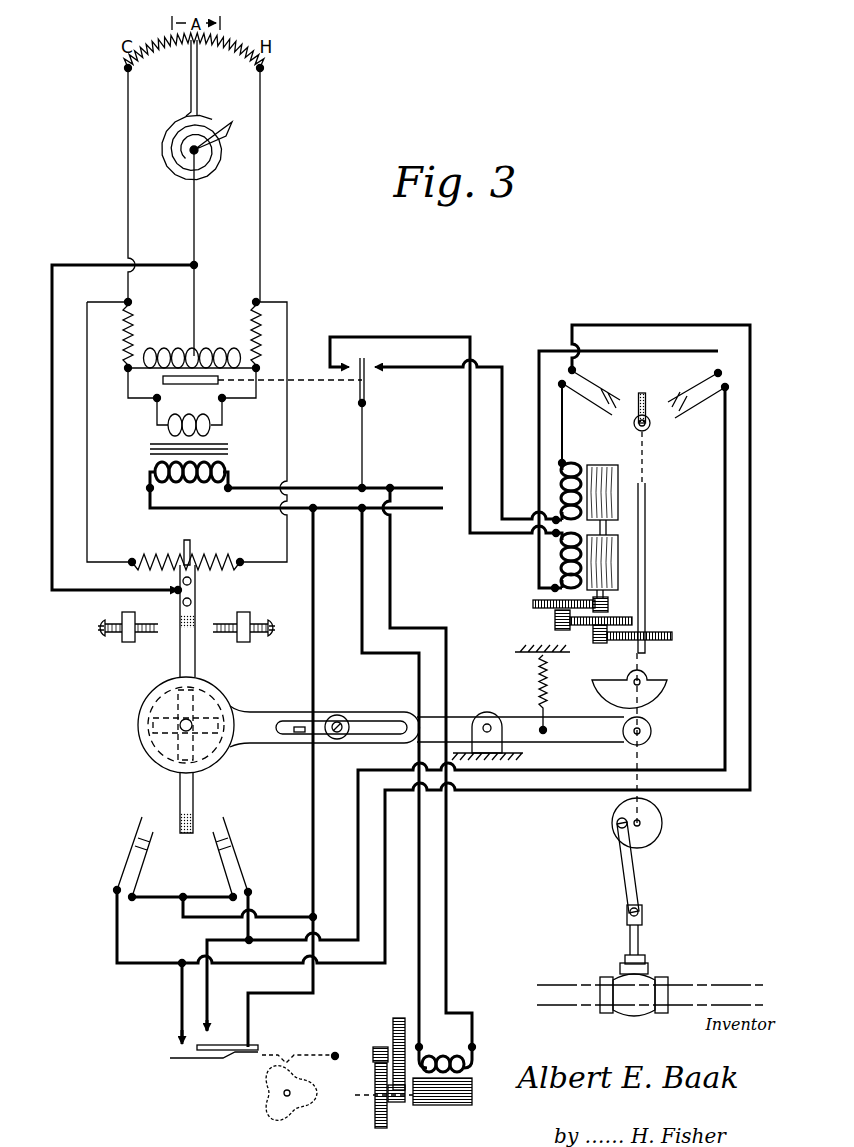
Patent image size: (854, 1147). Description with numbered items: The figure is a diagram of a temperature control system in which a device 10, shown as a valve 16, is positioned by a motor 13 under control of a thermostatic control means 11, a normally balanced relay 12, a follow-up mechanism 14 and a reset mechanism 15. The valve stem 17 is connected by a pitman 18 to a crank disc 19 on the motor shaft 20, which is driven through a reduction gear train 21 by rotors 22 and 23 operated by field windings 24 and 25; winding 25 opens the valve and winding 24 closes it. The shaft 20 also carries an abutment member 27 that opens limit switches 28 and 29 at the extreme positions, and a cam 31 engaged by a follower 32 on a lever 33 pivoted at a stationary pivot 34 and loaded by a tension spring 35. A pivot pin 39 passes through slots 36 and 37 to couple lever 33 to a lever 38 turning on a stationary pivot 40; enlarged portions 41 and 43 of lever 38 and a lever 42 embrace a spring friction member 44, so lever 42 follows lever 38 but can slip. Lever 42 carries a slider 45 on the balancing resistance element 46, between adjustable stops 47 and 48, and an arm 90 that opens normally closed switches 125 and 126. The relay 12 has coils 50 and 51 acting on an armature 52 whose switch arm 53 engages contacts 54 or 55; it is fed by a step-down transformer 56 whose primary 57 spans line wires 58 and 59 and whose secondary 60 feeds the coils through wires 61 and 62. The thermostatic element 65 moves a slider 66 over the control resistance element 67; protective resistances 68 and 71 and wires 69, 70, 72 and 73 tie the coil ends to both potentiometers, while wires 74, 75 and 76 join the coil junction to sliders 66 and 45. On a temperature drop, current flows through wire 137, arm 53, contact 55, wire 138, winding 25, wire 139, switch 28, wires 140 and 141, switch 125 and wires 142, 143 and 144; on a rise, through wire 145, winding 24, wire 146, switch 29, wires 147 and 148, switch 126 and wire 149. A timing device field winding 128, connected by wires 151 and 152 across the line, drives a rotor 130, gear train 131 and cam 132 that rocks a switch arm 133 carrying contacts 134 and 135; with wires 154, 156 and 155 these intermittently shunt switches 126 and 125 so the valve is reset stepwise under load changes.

The device to be positioned 10 is at (662, 969).
The control means 11 is at (268, 92).
The normally balanced relay 12 is at (294, 323).
The motor 13 is at (651, 559).
The follow-up mechanism 14 is at (245, 576).
The automatic reset mechanism 15 is at (136, 746).
The valve 16 is at (626, 980).
The valve stem 17 is at (630, 938).
The pitman 18 is at (628, 879).
The crank disc 19 is at (662, 829).
The shaft 20 is at (646, 627).
The reduction gear train 21 is at (596, 643).
The motor rotor 22 is at (609, 568).
The motor rotor 23 is at (610, 493).
The field winding 24 is at (561, 568).
The field winding 25 is at (561, 498).
The abutment member 27 is at (642, 393).
The limit switch 28 is at (606, 410).
The limit switch 29 is at (686, 416).
The cam 31 is at (660, 689).
The cam follower 32 is at (651, 734).
The lever 33 is at (570, 743).
The stationary pivot 34 is at (486, 717).
The tension spring 35 is at (539, 676).
The elongated slot 36 is at (384, 720).
The elongated slot 37 is at (300, 735).
The lever 38 is at (251, 712).
The pivot pin 39 is at (338, 716).
The stationary pivot 40 is at (193, 729).
The enlarged portion 41 is at (216, 690).
The lever 42 is at (180, 658).
The enlarged portion 43 is at (146, 703).
The spring friction member 44 is at (139, 717).
The slider 45 is at (176, 585).
The balancing potentiometer resistance element 46 is at (171, 548).
The adjustable stop 47 is at (154, 621).
The adjustable stop 48 is at (224, 621).
The relay coil 50 is at (160, 347).
The relay coil 51 is at (211, 347).
The armature 52 is at (182, 384).
The switch arm 53 is at (367, 389).
The stationary contact 54 is at (344, 365).
The stationary contact 55 is at (383, 366).
The step-down transformer 56 is at (147, 451).
The primary 57 is at (190, 484).
The line wire 58 is at (306, 487).
The line wire 59 is at (262, 510).
The secondary 60 is at (187, 416).
The wire 61 is at (127, 400).
The wire 62 is at (254, 393).
The thermostatic element 65 is at (177, 184).
The slider 66 is at (198, 80).
The control potentiometer resistance element 67 is at (165, 50).
The protective resistance 68 is at (134, 318).
The wire 69 is at (130, 222).
The wire 70 is at (89, 506).
The protective resistance 71 is at (253, 313).
The wire 72 is at (259, 248).
The wire 73 is at (287, 448).
The wire 74 is at (195, 302).
The wire 75 is at (196, 230).
The wire 76 is at (52, 428).
The arm 90 is at (180, 796).
The switch 125 is at (138, 822).
The switch 126 is at (229, 822).
The timing device field winding 128 is at (461, 1004).
The rotor 130 is at (477, 1082).
The reduction gear train 131 is at (385, 1082).
The cam 132 is at (268, 1110).
The pivoted switch arm 133 is at (281, 1051).
The contact 134 is at (210, 1045).
The contact 135 is at (189, 1062).
The wire 137 is at (367, 451).
The wire 138 is at (504, 452).
The wire 139 is at (566, 447).
The wire 140 is at (650, 324).
The wire 141 is at (128, 956).
The wire 142 is at (156, 894).
The wire 143 is at (270, 916).
The wire 144 is at (311, 861).
The wire 145 is at (445, 336).
The wire 146 is at (540, 350).
The wire 147 is at (722, 522).
The wire 148 is at (247, 931).
The wire 149 is at (208, 894).
The wire 151 is at (448, 651).
The wire 152 is at (417, 672).
The wire 154 is at (212, 1001).
The wire 155 is at (297, 994).
The wire 156 is at (178, 1010).